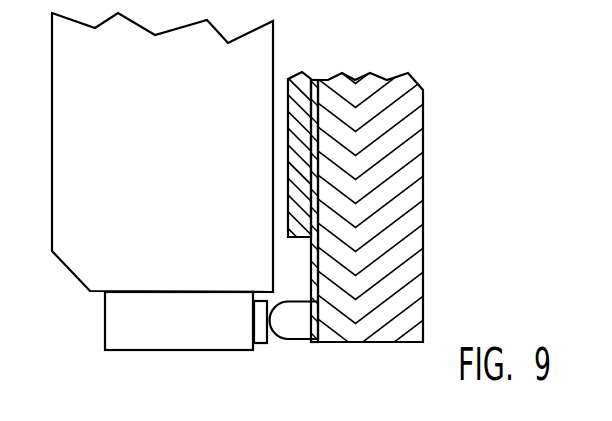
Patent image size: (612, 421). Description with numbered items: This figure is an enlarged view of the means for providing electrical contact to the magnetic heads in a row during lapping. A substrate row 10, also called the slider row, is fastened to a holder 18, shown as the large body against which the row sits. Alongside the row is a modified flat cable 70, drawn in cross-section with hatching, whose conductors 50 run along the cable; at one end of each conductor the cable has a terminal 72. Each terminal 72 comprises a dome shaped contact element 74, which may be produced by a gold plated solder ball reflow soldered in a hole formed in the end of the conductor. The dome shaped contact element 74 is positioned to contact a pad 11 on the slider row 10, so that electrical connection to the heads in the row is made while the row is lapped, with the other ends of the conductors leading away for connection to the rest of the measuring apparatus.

The holder 18 is at (176, 152).
The substrate row 10 is at (118, 330).
The pad 11 is at (262, 334).
The terminal 72 is at (288, 232).
The conductor 50 is at (317, 80).
The modified flat cable 70 is at (413, 132).
The dome shaped contact element 74 is at (298, 327).